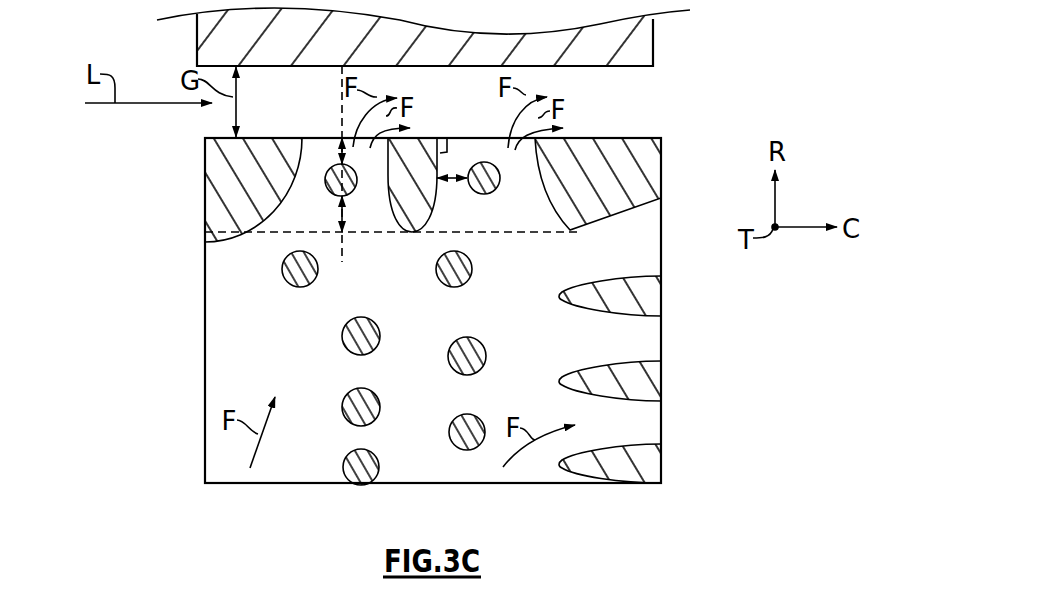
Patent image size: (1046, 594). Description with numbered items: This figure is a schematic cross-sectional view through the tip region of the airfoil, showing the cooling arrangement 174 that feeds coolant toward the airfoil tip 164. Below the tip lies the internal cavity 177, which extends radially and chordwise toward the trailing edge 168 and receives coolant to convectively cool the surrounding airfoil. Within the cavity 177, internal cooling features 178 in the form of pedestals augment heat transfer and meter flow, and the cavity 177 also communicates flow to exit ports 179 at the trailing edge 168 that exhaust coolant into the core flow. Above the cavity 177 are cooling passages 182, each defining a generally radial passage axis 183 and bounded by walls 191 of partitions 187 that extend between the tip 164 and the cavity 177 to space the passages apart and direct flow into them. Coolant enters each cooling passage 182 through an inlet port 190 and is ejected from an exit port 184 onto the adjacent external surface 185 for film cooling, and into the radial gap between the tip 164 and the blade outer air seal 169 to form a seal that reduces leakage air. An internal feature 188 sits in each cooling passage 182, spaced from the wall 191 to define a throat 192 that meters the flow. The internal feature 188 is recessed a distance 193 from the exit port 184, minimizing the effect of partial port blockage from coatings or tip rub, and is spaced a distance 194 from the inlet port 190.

The airfoil tip 164 is at (212, 137).
The trailing edge 168 is at (665, 463).
The blade outer air seal 169 is at (657, 50).
The cooling arrangement 174 is at (133, 152).
The internal cavity 177 is at (290, 463).
The internal cooling features 178 is at (380, 472).
The exit ports 179 is at (647, 410).
The cooling passage 182 is at (351, 226).
The passage axis 183 is at (342, 262).
The exit port 184 is at (461, 138).
The external surface 185 is at (642, 137).
The partition 187 is at (213, 187).
The internal feature 188 is at (330, 164).
The inlet port 190 is at (497, 234).
The wall 191 is at (438, 138).
The throat 192 is at (447, 183).
The distance from exit port 193 is at (340, 152).
The distance from inlet port 194 is at (337, 211).